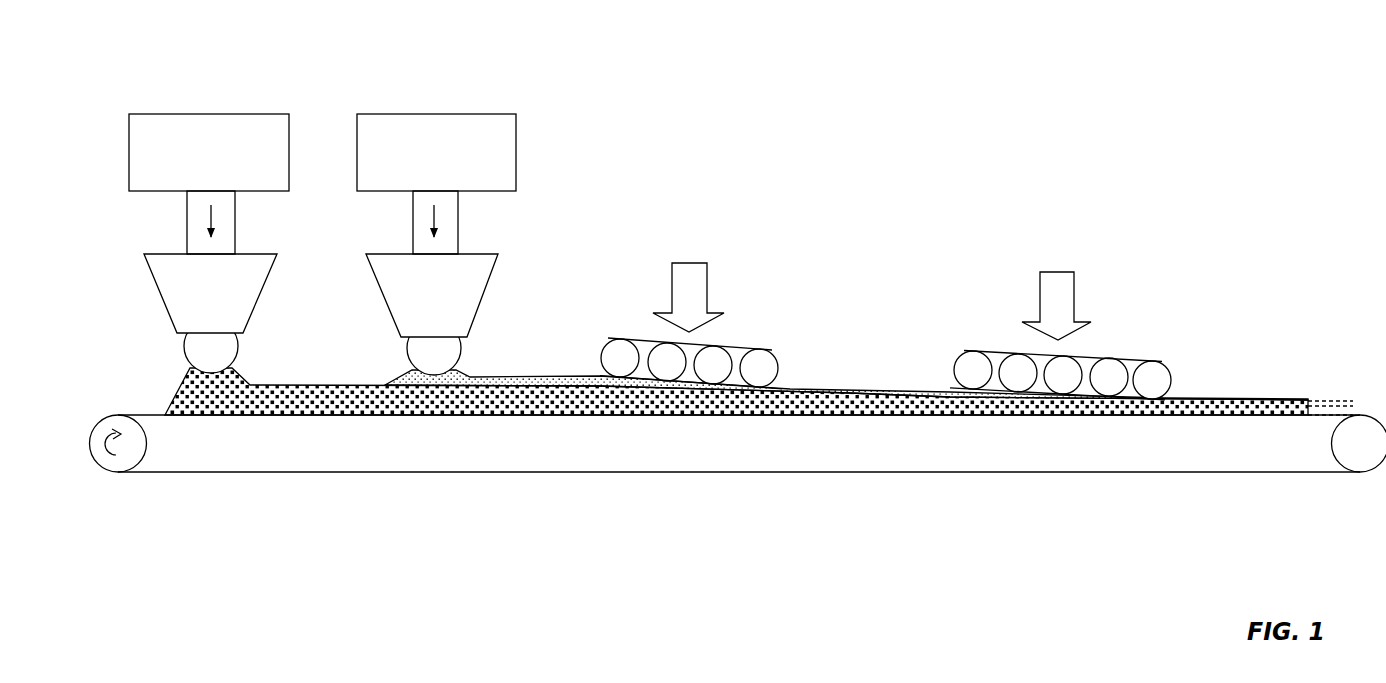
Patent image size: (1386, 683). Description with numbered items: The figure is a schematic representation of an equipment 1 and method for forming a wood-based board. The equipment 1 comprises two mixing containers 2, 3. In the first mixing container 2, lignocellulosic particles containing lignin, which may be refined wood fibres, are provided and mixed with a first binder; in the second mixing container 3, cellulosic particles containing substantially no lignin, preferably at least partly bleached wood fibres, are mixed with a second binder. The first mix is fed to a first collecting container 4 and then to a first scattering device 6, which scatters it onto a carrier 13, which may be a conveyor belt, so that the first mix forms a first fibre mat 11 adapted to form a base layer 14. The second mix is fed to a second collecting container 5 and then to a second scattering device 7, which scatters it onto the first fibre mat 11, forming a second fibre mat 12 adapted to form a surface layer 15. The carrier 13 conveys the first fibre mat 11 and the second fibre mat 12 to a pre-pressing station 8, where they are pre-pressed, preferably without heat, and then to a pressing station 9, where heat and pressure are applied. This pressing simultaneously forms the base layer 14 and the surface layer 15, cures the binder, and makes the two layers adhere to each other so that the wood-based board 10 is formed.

The equipment 1 is at (258, 523).
The first mixing container 2 is at (215, 131).
The second mixing container 3 is at (430, 128).
The first collecting container 4 is at (157, 298).
The second collecting container 5 is at (490, 283).
The first scattering device 6 is at (182, 352).
The second scattering device 7 is at (462, 352).
The pre-pressing station 8 is at (727, 331).
The pressing station 9 is at (1110, 338).
The wood-based board 10 is at (1213, 383).
The first fibre mat 11 is at (313, 408).
The second fibre mat 12 is at (527, 384).
The carrier 13 is at (840, 472).
The base layer 14 is at (1222, 415).
The surface layer 15 is at (1260, 416).